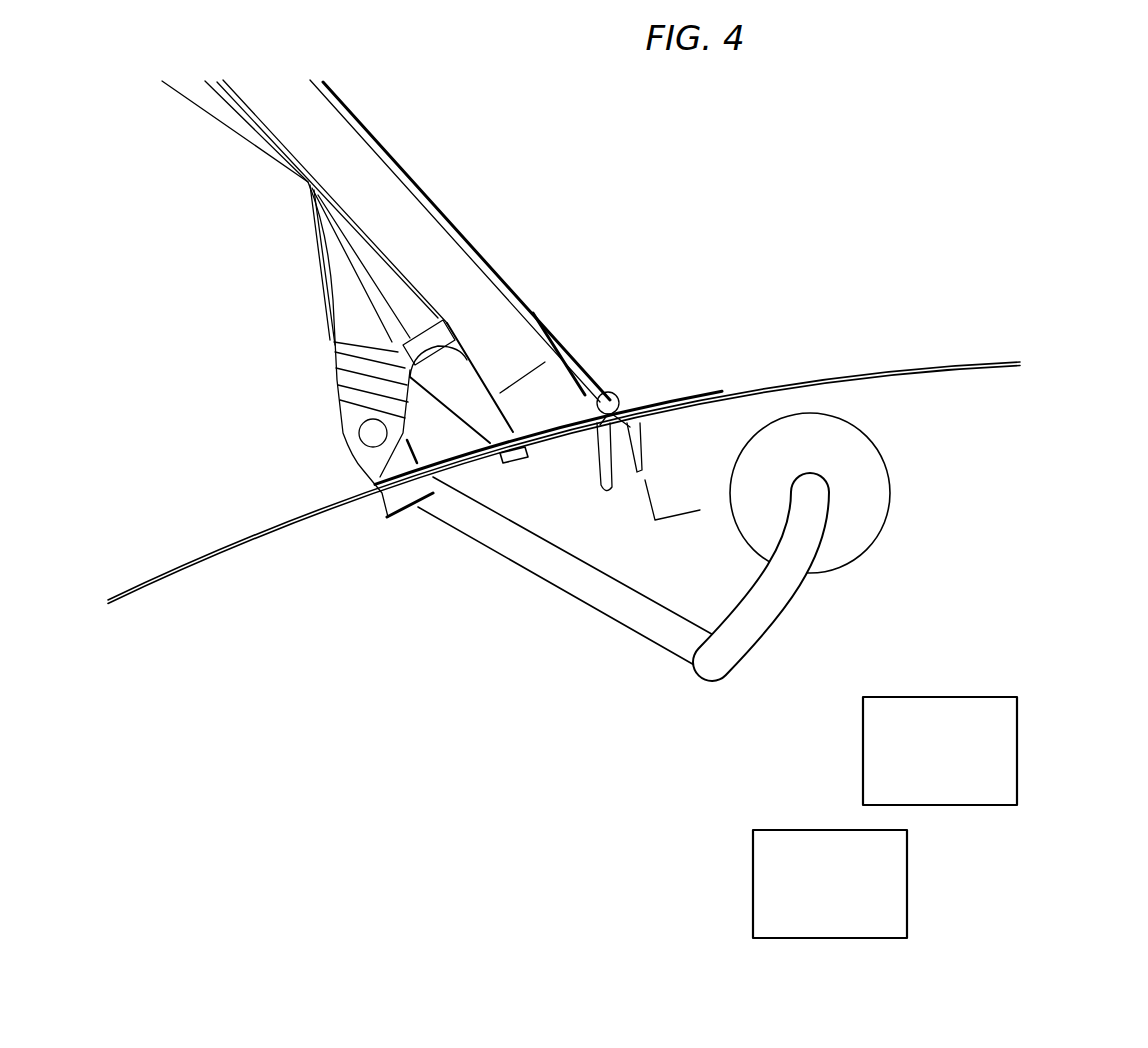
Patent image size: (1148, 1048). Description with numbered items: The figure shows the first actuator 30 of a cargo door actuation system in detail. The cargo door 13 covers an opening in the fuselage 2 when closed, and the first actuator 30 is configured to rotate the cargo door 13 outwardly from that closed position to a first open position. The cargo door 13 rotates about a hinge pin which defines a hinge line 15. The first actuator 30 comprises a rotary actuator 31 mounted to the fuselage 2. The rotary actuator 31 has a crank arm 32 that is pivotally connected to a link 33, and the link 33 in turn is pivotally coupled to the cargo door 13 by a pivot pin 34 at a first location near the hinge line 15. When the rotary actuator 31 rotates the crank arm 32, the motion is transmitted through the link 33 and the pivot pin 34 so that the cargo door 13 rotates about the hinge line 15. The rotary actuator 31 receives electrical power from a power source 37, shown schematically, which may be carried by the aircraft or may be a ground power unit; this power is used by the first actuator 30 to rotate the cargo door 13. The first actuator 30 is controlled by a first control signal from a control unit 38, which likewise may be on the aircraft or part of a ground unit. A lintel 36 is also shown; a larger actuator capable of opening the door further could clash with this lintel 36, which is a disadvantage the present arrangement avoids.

The fuselage 2 is at (788, 380).
The cargo door 13 is at (380, 172).
The hinge line 15 is at (610, 392).
The first actuator 30 is at (545, 590).
The rotary actuator 31 is at (853, 527).
The crank arm 32 is at (765, 612).
The link 33 is at (565, 573).
The pivot pin 34 is at (373, 432).
The lintel 36 is at (645, 490).
The power source 37 is at (830, 884).
The control unit 38 is at (940, 751).